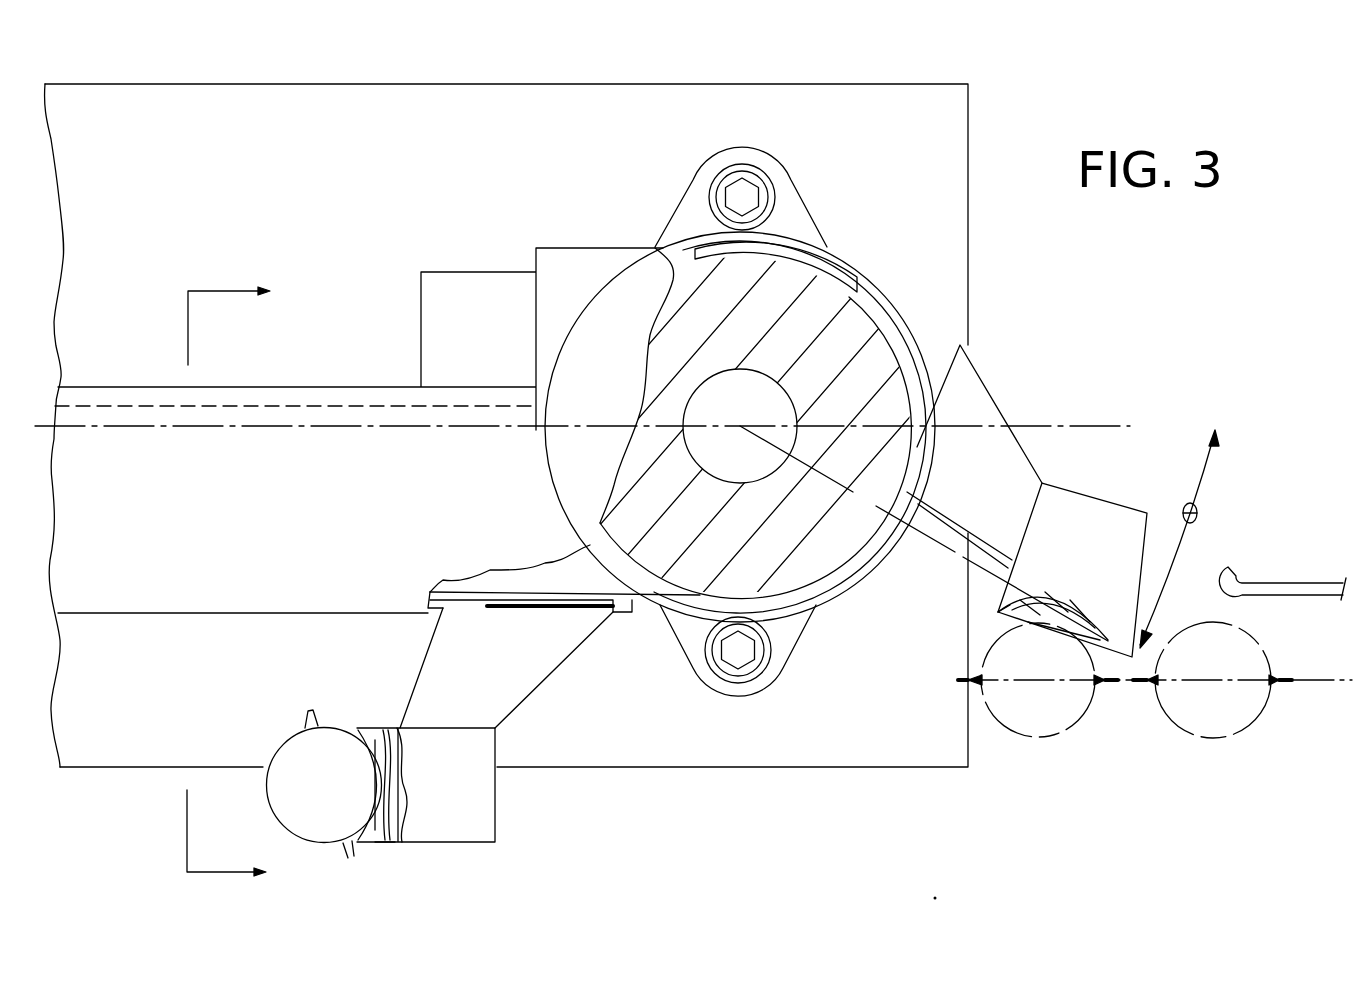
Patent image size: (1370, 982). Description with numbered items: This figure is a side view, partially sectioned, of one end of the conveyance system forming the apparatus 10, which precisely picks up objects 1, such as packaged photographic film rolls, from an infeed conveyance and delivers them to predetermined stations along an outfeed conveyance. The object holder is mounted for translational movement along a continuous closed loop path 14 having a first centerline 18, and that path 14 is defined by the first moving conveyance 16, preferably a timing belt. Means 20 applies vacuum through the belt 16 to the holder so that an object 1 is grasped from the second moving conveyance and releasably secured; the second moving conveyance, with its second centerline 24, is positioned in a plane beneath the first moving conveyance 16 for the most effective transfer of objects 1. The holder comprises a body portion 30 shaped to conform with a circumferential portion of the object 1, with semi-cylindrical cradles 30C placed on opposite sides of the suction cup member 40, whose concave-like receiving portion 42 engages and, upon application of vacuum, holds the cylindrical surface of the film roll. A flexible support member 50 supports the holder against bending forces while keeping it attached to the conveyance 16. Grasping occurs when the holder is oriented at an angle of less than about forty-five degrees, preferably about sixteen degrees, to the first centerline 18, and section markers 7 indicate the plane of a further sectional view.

The object 1 is at (275, 748).
The section line 7- 7 is at (228, 581).
The apparatus 10 is at (836, 66).
The continuous closed loop path 14 is at (860, 175).
The first moving conveyance 16 is at (862, 272).
The first centerline 18 is at (375, 430).
The means for applying vacuum 20 is at (344, 412).
The second centerline 24 is at (1330, 680).
The body portion 30 is at (1082, 492).
The semi-cylindrical cradles 30C is at (1063, 590).
The cup member 40 is at (1000, 600).
The concave-like receiving portion 42 is at (1062, 632).
The flexible support member 50 is at (983, 382).